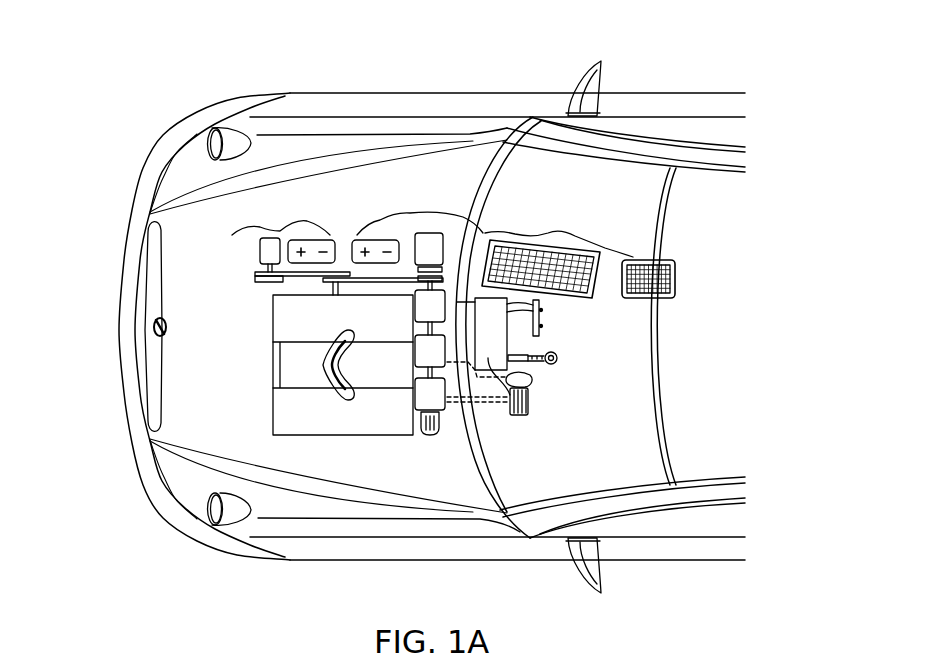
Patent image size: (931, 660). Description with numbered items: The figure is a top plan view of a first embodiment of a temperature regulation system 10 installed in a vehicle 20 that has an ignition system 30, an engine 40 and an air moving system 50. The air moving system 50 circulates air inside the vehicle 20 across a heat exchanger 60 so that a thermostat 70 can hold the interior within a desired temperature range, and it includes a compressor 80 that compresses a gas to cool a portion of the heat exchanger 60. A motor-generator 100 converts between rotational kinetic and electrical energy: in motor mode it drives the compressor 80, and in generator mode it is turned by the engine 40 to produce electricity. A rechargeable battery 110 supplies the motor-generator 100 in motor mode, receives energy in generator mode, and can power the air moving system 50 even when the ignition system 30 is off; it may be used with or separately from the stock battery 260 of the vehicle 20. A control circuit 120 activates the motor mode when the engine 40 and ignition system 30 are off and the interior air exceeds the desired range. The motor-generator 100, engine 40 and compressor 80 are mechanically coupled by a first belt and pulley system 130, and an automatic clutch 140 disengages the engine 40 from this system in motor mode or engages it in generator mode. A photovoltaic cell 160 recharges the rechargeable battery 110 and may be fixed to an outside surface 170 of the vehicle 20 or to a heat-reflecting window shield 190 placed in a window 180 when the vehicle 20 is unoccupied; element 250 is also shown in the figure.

The temperature regulation system 10 is at (109, 47).
The vehicle 20 is at (650, 91).
The ignition system 30 is at (521, 362).
The engine 40 is at (278, 408).
The air moving system 50 is at (428, 445).
The heat exchanger 60 is at (427, 352).
The thermostat 70 is at (542, 312).
The compressor 80 is at (427, 300).
The motor-generator 100 is at (427, 237).
The rechargeable battery 110 is at (372, 240).
The control circuit 120 is at (520, 414).
The first belt and pulley system 130 is at (236, 258).
The automatic clutch 140 is at (447, 267).
The photovoltaic cell 160 is at (665, 270).
The outside surface 170 is at (706, 348).
The window 180 is at (621, 400).
The heat-reflecting window shield 190 is at (545, 256).
The power module 250 is at (263, 239).
The stock battery 260 is at (313, 240).